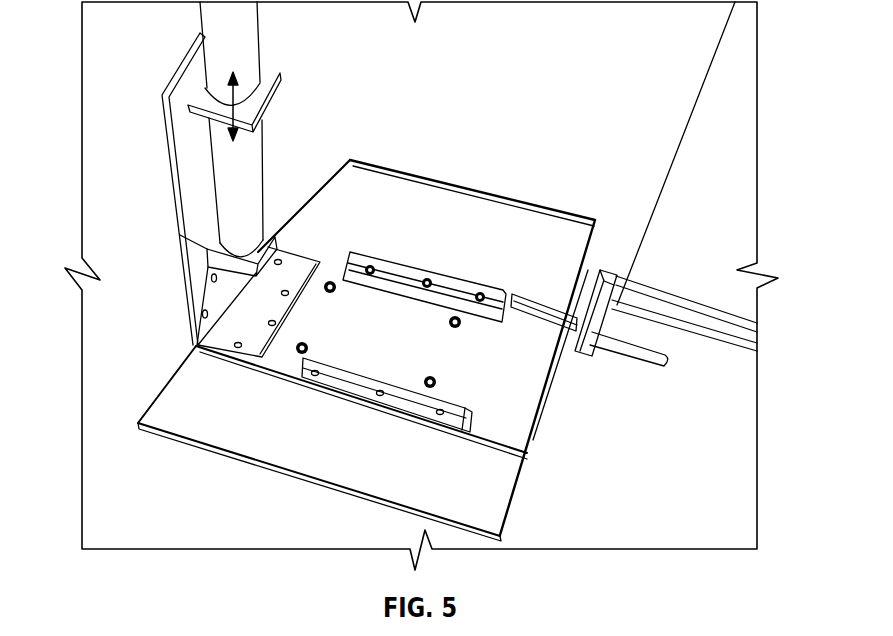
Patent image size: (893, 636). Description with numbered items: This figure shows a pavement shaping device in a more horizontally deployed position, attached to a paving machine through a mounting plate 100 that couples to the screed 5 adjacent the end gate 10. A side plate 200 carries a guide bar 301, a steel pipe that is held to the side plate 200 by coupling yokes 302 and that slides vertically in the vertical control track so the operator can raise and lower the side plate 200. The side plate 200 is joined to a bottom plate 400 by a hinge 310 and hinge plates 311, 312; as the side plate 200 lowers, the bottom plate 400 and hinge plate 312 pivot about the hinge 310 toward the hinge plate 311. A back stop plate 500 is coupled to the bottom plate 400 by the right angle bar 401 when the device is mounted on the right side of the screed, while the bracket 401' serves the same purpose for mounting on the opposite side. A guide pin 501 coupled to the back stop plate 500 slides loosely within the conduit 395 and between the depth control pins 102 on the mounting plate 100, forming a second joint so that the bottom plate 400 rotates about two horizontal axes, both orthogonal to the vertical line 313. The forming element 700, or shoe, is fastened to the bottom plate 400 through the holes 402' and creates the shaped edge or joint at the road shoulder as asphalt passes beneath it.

The screed 5 is at (747, 237).
The end gate 10 is at (97, 440).
The mounting plate 100 is at (667, 157).
The depth control pins 102 is at (588, 347).
The side plate 200 is at (170, 183).
The guide bar 301 is at (247, 47).
The coupling yokes 302 is at (278, 77).
The hinge 310 is at (211, 296).
The hinge plate 311 is at (193, 280).
The hinge plate 312 is at (228, 327).
The vertical line 313 is at (207, 85).
The conduit 395 is at (530, 300).
The bottom plate 400 is at (527, 440).
The right angle bar 401 is at (424, 270).
The bracket 401' is at (387, 375).
The holes 402' is at (414, 293).
The back stop plate 500 is at (410, 193).
The guide pin 501 is at (668, 367).
The forming element 700 is at (505, 528).